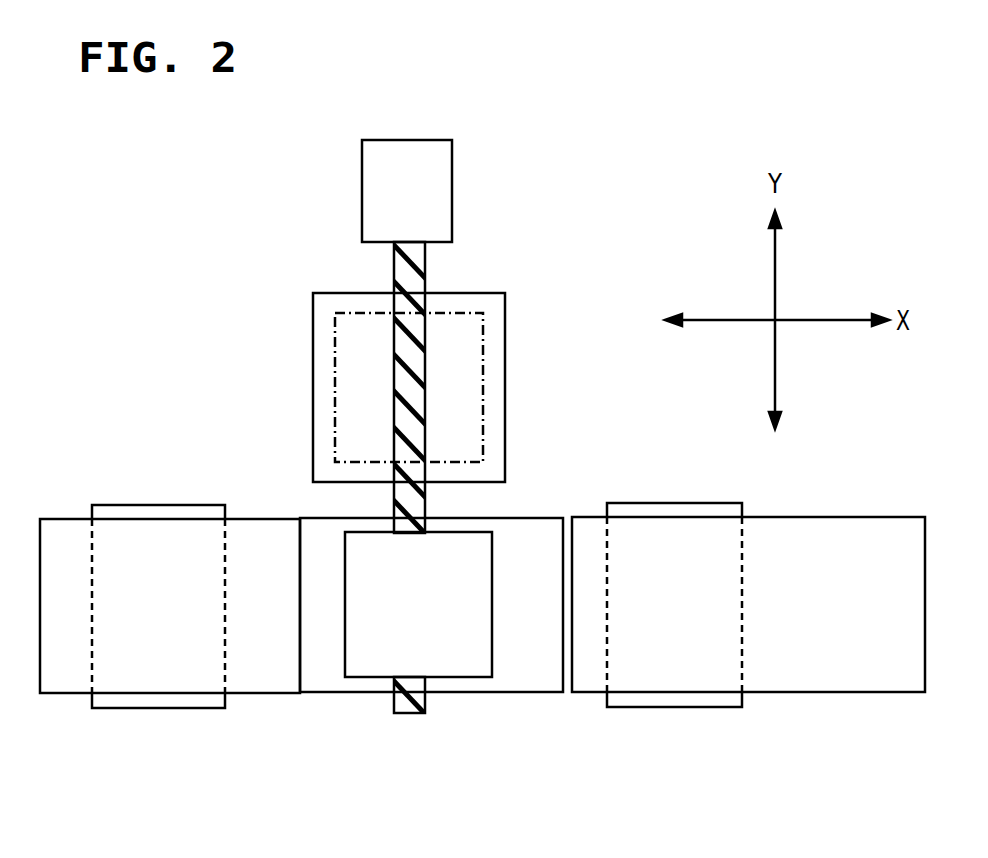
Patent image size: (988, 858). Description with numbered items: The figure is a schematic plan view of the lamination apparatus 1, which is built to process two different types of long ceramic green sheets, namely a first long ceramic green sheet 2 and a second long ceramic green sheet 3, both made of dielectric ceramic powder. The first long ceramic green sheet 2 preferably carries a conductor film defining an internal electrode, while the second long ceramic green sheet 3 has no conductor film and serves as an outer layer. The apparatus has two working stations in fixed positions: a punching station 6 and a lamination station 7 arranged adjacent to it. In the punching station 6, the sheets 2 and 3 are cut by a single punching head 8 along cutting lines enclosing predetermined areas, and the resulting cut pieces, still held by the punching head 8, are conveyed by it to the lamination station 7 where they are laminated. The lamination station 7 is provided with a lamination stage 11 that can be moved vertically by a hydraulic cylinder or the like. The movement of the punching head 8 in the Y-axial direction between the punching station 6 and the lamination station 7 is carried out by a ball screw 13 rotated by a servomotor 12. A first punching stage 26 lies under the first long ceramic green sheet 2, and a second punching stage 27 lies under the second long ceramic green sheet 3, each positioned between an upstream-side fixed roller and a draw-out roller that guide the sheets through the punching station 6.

The lamination apparatus 1 is at (107, 217).
The first long ceramic green sheet 2 is at (270, 683).
The second long ceramic green sheet 3 is at (838, 680).
The punching station 6 is at (531, 496).
The lamination station 7 is at (524, 370).
The punching head 8 is at (333, 375).
The lamination stage 11 is at (320, 323).
The servomotor 12 is at (442, 185).
The ball screw 13 is at (417, 263).
The first punching stage 26 is at (172, 513).
The second punching stage 27 is at (657, 510).